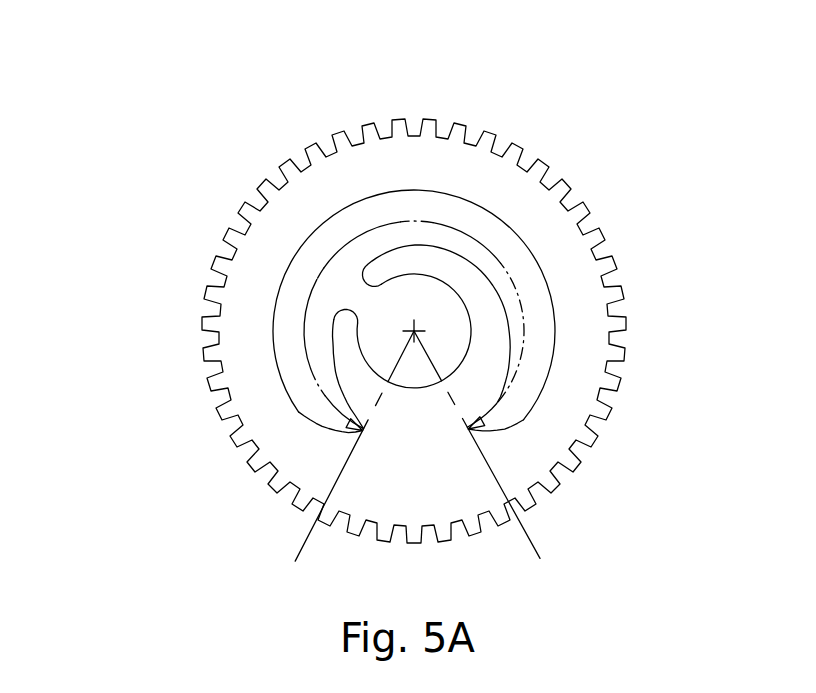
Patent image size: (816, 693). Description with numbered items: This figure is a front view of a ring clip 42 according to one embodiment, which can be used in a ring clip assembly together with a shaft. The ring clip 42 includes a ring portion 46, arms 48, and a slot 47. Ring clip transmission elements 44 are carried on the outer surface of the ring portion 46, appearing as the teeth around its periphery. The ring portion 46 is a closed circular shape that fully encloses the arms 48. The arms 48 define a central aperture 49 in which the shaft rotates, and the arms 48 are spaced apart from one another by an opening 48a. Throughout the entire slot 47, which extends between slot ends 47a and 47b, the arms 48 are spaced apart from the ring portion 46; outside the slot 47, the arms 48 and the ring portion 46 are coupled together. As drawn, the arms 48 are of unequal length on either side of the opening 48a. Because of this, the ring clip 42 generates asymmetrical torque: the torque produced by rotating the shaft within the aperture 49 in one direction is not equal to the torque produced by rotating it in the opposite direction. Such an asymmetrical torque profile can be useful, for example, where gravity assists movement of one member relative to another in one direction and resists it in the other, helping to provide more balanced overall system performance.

The ring clip 42 is at (390, 294).
The ring clip transmission elements 44 is at (490, 137).
The ring portion 46 is at (327, 190).
The slot 47 is at (478, 221).
The slot end 47a is at (310, 535).
The slot end 47b is at (527, 535).
The arms 48 is at (490, 326).
The opening 48a is at (361, 297).
The aperture 49 is at (447, 342).